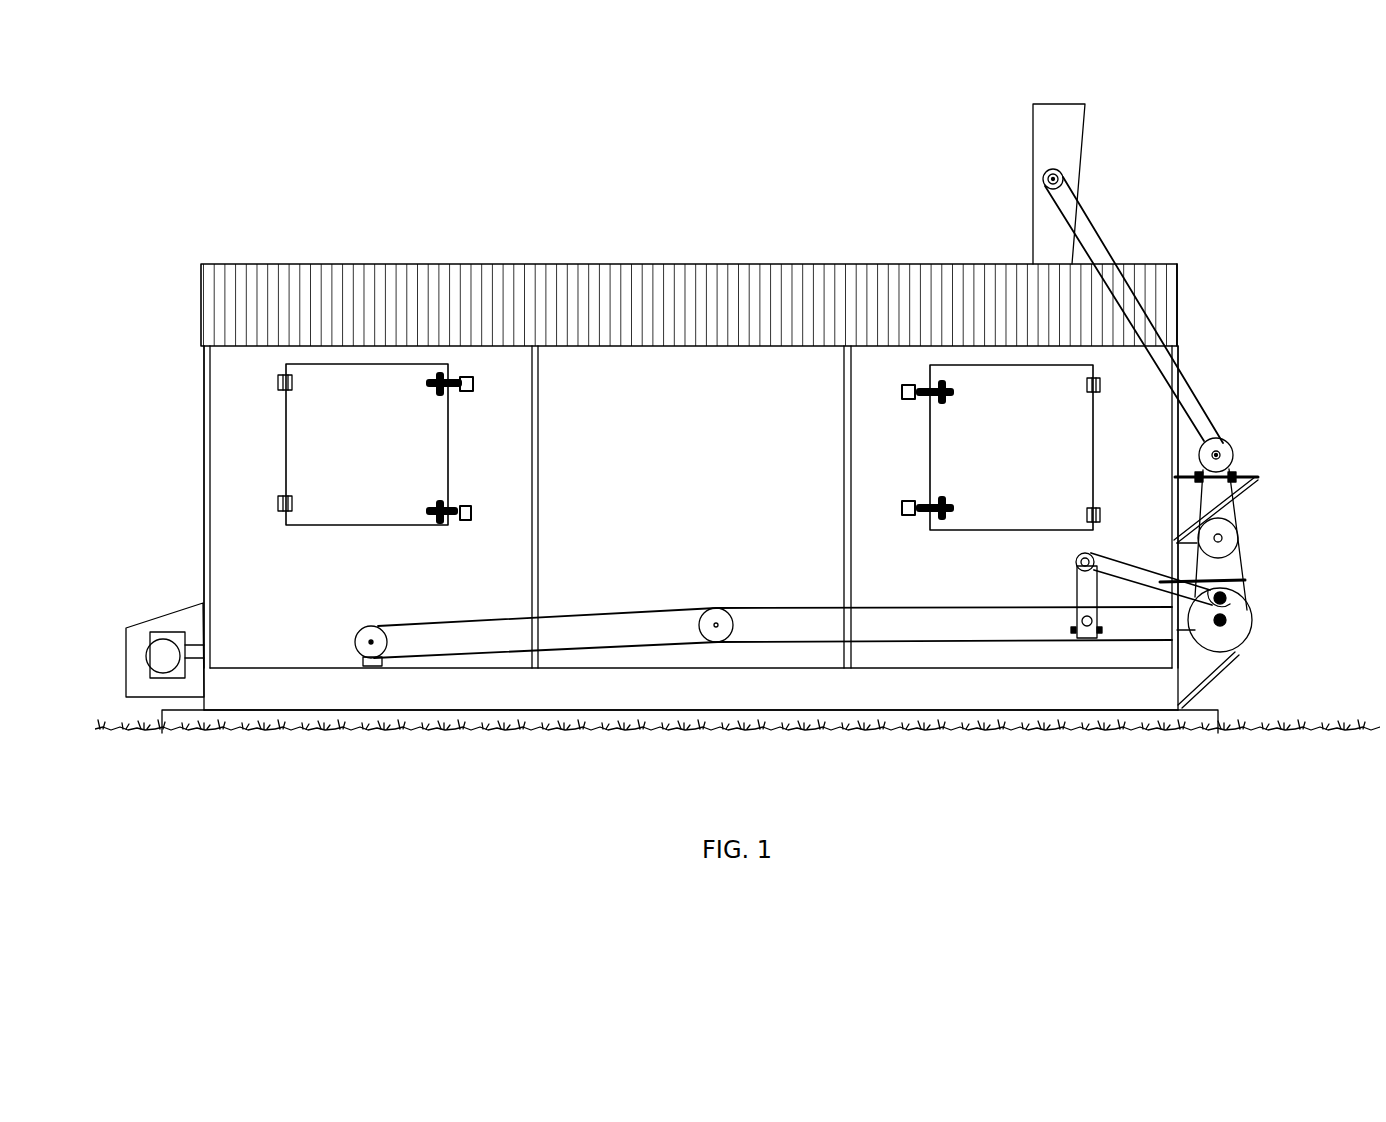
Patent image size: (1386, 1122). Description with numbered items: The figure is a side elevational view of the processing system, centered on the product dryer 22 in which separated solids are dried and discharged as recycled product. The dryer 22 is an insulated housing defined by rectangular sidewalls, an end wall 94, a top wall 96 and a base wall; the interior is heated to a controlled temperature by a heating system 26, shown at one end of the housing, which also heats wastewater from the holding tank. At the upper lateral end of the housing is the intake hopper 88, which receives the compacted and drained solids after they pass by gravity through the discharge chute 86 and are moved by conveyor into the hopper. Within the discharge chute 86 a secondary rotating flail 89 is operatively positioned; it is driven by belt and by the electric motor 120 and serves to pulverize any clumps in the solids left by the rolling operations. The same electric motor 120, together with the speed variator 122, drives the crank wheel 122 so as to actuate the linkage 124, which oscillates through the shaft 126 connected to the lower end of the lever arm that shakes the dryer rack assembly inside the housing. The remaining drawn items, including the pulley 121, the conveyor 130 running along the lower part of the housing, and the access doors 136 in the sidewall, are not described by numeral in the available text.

The product dryer 22 is at (513, 258).
The heating system 26 is at (180, 604).
The discharge chute 86 is at (1033, 140).
The intake hopper 88 is at (1178, 264).
The secondary rotating flail 89 is at (1043, 179).
The end wall 94 is at (203, 360).
The top wall 96 is at (305, 263).
The electric motor 120 is at (1220, 441).
The idler pulley 121 is at (1238, 537).
The speed variator 122 is at (1244, 625).
The linkage 124 is at (1076, 563).
The shaft 126 is at (1073, 632).
The conveyor 130 is at (690, 605).
The access door 136 is at (430, 426).